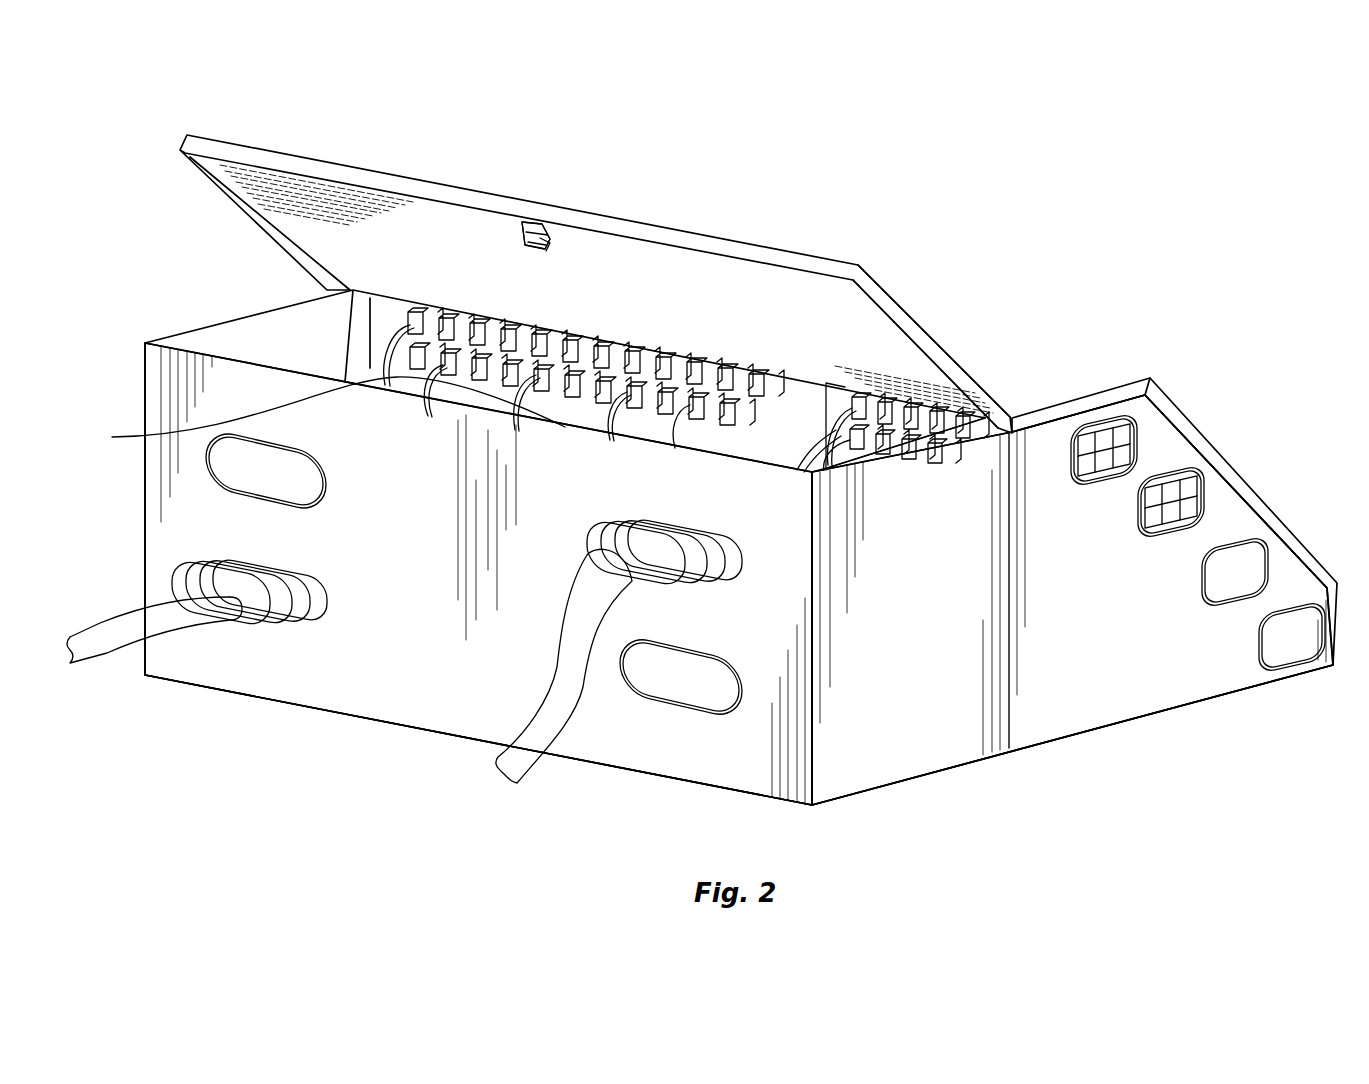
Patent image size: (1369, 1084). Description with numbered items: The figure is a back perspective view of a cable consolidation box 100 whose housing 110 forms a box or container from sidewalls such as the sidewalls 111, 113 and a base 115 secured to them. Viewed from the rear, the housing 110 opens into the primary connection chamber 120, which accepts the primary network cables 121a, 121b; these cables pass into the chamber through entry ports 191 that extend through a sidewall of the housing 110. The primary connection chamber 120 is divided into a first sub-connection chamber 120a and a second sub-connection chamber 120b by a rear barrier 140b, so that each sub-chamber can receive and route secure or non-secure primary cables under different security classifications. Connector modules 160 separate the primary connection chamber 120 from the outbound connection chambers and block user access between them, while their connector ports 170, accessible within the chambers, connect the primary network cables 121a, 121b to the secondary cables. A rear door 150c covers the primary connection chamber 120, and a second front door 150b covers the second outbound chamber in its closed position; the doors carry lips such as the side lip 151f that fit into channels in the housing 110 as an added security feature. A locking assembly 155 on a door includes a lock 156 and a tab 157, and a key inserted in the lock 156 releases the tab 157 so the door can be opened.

The cable consolidation box 100 is at (1034, 170).
The housing 110 is at (1287, 576).
The sidewall 111 is at (915, 703).
The sidewall 113 is at (377, 702).
The base 115 is at (1157, 710).
The primary connection chamber 120 is at (230, 244).
The first sub-connection chamber 120a is at (286, 322).
The second sub-connection chamber 120b is at (792, 449).
The primary network cable 121a is at (90, 645).
The primary network cable 121b is at (523, 760).
The rear barrier 140b is at (743, 417).
The second front door 150b is at (1107, 378).
The rear door 150c is at (805, 288).
The side lip 151f is at (905, 330).
The locking assembly 155 is at (566, 191).
The lock 156 is at (528, 220).
The tab 157 is at (320, 413).
The connector module 160 is at (620, 373).
The connector port 170 is at (423, 313).
The entry port 191 is at (205, 550).